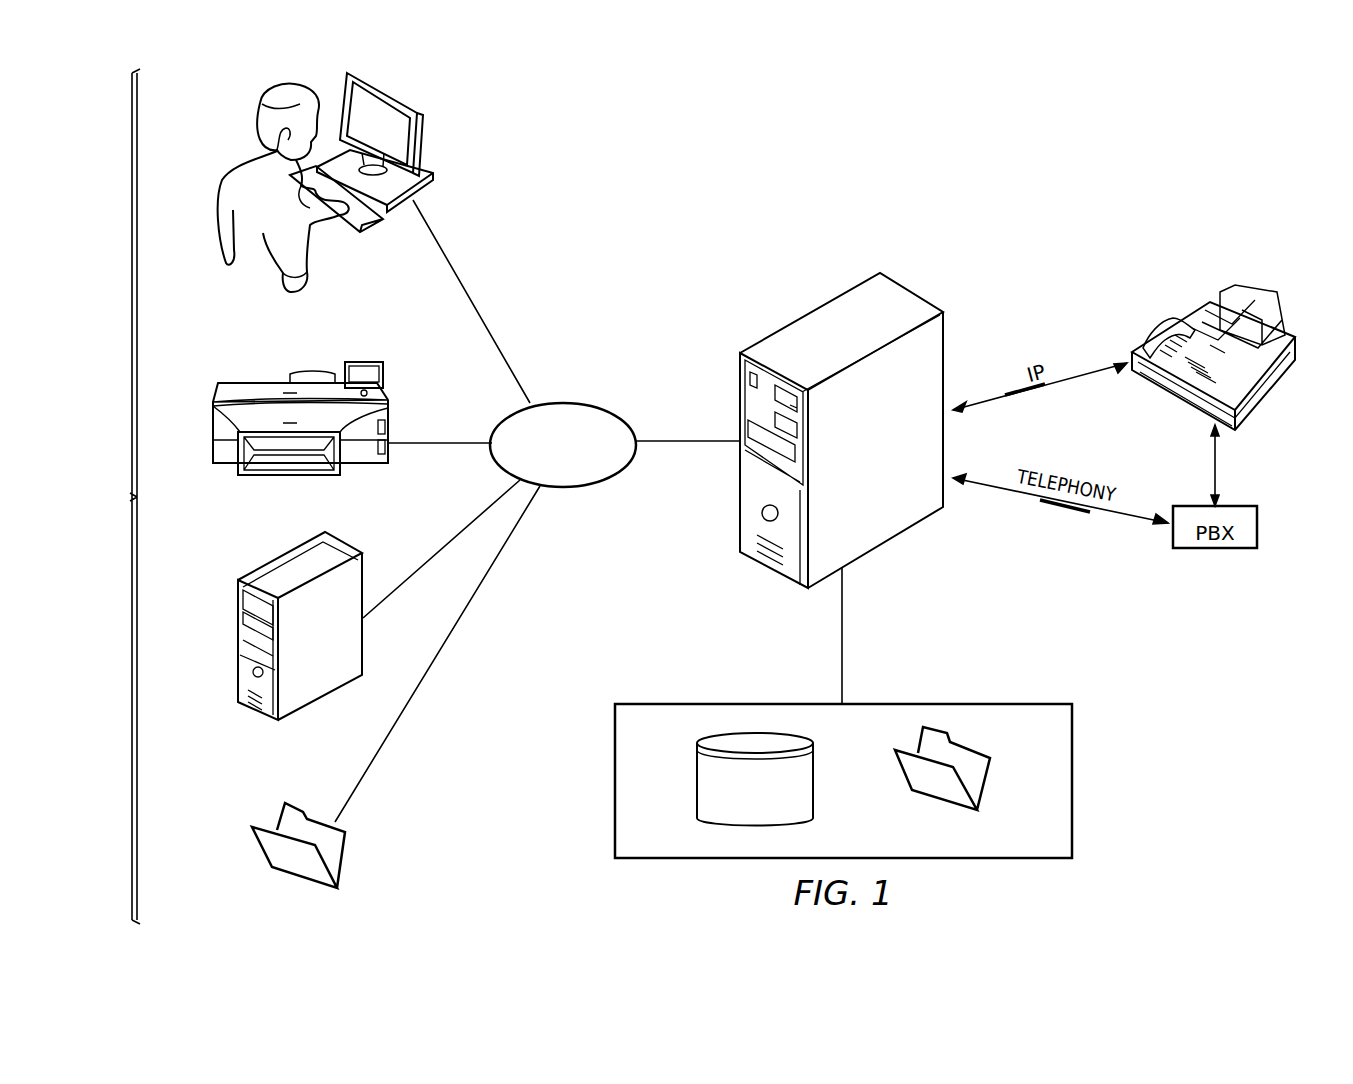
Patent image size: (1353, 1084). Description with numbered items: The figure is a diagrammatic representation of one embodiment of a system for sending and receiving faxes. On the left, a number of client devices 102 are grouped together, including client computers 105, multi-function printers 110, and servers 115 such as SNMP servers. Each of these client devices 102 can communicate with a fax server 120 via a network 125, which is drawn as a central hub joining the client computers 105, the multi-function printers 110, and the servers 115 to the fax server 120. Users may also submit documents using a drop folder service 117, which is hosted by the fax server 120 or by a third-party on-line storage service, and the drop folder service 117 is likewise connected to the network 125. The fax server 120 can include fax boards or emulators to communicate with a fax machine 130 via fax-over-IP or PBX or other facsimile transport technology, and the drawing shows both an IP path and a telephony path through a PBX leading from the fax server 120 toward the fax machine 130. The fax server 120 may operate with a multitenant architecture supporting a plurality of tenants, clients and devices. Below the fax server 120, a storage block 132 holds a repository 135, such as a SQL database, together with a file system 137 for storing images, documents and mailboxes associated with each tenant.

The client devices 102 is at (108, 496).
The client computers 105 is at (222, 176).
The multi-function printers 110 is at (213, 418).
The servers 115 is at (238, 658).
The drop folder service 117 is at (263, 852).
The fax server 120 is at (797, 323).
The network 125 is at (543, 458).
The fax machine 130 is at (1158, 318).
The storage 132 is at (886, 781).
The repository 135 is at (697, 782).
The file system 137 is at (988, 785).